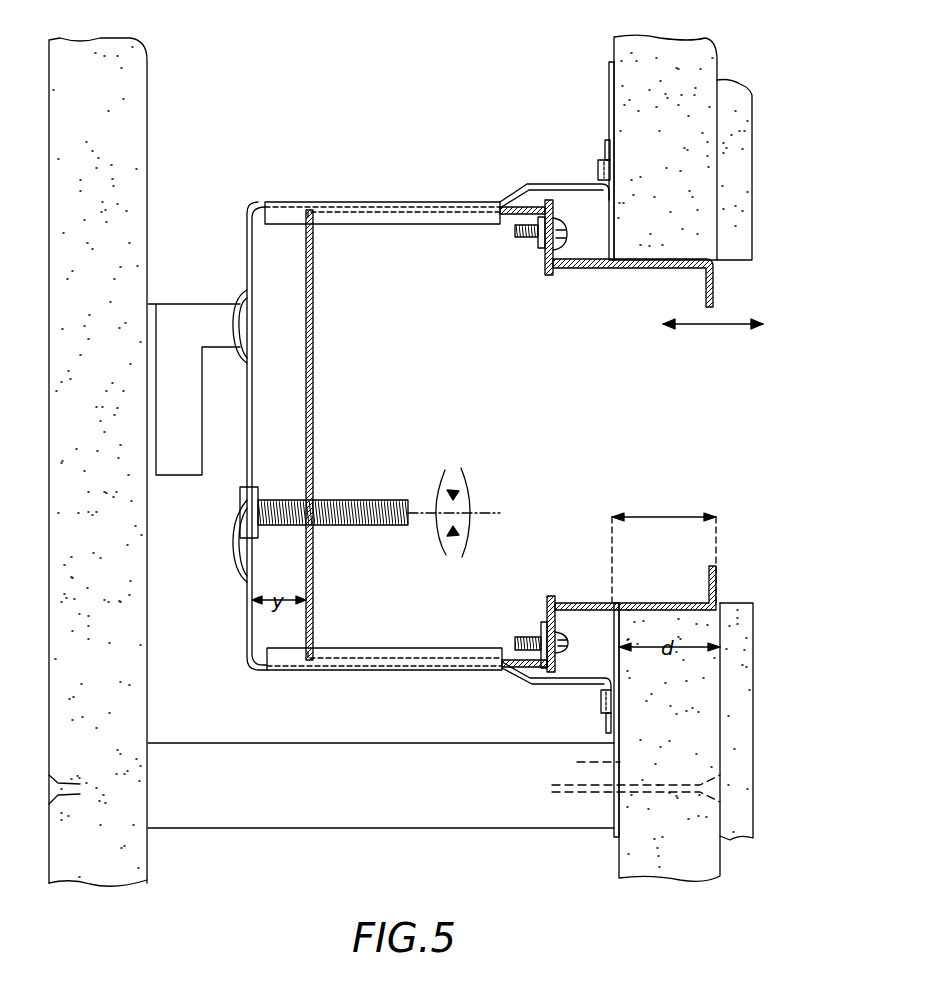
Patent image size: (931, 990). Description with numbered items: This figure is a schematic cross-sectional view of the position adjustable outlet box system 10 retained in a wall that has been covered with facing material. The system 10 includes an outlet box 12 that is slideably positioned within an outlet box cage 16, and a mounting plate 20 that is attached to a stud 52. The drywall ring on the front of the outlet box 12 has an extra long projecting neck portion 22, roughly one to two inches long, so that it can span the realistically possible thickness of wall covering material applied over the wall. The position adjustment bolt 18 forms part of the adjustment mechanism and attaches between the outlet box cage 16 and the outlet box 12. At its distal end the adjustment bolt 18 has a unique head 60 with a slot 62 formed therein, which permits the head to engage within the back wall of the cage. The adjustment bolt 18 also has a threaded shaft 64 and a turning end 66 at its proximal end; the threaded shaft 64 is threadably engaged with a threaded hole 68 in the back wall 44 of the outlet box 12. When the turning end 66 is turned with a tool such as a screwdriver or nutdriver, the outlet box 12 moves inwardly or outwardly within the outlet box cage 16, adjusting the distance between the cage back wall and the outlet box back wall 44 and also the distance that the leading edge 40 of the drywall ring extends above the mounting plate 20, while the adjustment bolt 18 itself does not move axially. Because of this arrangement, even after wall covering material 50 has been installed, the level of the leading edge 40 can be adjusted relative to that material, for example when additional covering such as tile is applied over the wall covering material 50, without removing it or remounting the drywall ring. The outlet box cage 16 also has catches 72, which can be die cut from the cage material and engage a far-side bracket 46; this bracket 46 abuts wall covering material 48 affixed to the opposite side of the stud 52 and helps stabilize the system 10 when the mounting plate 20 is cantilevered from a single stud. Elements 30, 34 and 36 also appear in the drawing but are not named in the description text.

The position adjustable outlet box system 10 is at (356, 167).
The outlet box 12 is at (510, 235).
The outlet box cage 16 is at (279, 678).
The adjustment bolt 18 is at (370, 480).
The mounting plate 20 is at (610, 82).
The projecting neck portion 22 is at (650, 265).
The support member 30 is at (400, 218).
The nut 34 is at (605, 148).
The bolt 36 is at (598, 172).
The leading edge 40 is at (715, 585).
The back wall 44 is at (315, 365).
The far-side bracket 46 is at (177, 305).
The wall covering material 48 is at (130, 90).
The wall covering material 50 is at (690, 125).
The stud 52 is at (735, 193).
The head 60 is at (236, 505).
The slot 62 is at (240, 542).
The threaded shaft 64 is at (372, 500).
The turning end 66 is at (417, 510).
The threaded hole 68 is at (313, 535).
The catches 72 is at (247, 215).